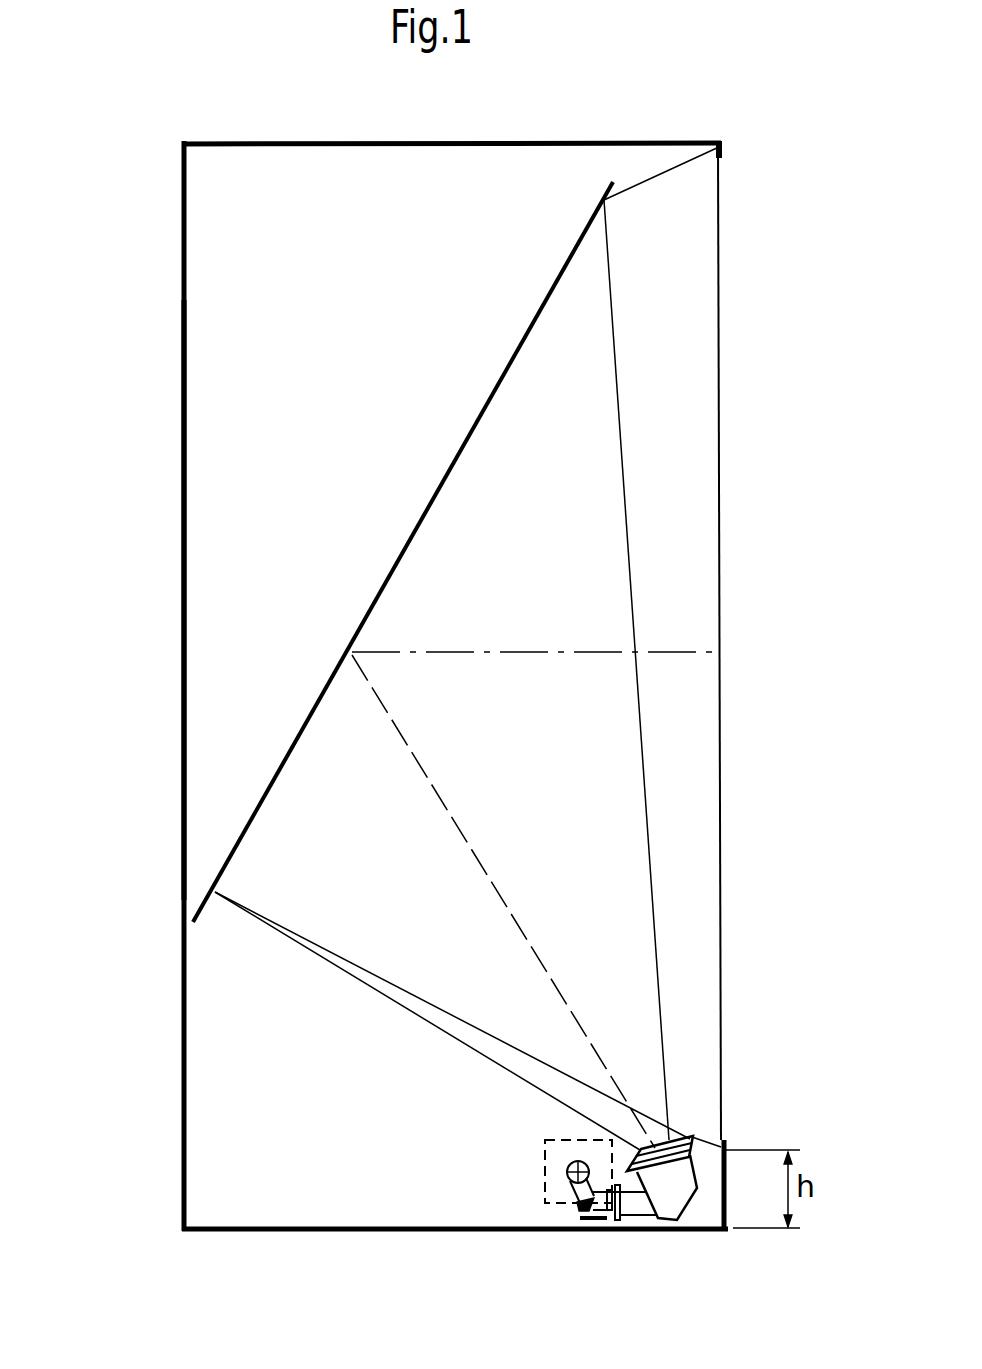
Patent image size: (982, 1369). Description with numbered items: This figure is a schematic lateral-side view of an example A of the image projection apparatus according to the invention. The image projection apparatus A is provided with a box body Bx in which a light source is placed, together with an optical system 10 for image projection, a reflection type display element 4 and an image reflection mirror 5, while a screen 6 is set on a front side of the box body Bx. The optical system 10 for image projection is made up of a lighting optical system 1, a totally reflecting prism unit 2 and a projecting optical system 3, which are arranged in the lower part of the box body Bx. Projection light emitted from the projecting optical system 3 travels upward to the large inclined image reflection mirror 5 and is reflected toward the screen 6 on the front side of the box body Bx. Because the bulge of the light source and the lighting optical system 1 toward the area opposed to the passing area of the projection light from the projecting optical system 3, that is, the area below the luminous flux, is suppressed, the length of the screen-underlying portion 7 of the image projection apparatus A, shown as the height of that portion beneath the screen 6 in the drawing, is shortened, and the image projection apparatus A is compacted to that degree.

The image projection apparatus A is at (150, 138).
The box body Bx is at (183, 574).
The lighting optical system 1 is at (543, 1165).
The totally reflecting prism unit 2 is at (573, 1212).
The projecting optical system 3 is at (688, 1220).
The reflection type display element 4 is at (595, 1222).
The image reflection mirror 5 is at (408, 545).
The screen 6 is at (721, 552).
The screen-underlying portion 7 is at (728, 1195).
The optical system for image projection 10 is at (697, 1130).